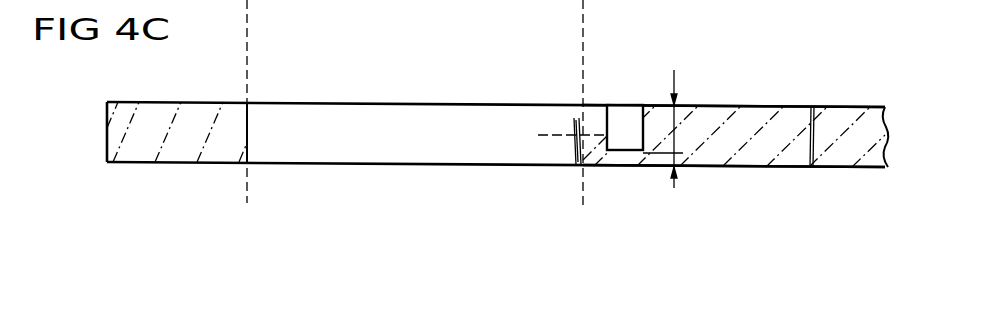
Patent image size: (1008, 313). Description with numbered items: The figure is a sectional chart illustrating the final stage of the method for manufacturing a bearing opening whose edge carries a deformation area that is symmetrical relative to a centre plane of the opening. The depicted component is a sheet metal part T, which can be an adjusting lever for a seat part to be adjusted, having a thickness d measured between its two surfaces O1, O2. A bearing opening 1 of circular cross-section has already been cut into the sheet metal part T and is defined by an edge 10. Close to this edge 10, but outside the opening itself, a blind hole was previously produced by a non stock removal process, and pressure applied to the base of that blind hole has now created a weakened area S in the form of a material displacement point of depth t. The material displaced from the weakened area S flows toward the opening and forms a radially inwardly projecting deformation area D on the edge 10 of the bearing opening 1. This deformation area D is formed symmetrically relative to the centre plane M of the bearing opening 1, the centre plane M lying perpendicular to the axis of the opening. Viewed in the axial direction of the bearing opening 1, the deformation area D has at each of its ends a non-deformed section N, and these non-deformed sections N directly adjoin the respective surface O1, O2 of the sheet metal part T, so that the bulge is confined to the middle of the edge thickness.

The bearing opening 1 is at (476, 148).
The edge of the bearing opening 10 is at (249, 147).
The centre plane of the bearing opening M is at (547, 133).
The non-deformed sections N is at (580, 108).
The deformation area D is at (577, 118).
The weakened area S is at (621, 128).
The depth of the weakened area t is at (686, 106).
The first surface of the sheet metal part O1 is at (758, 105).
The second surface of the sheet metal part O2 is at (733, 168).
The thickness of the sheet metal part d is at (812, 147).
The sheet metal part T is at (848, 168).